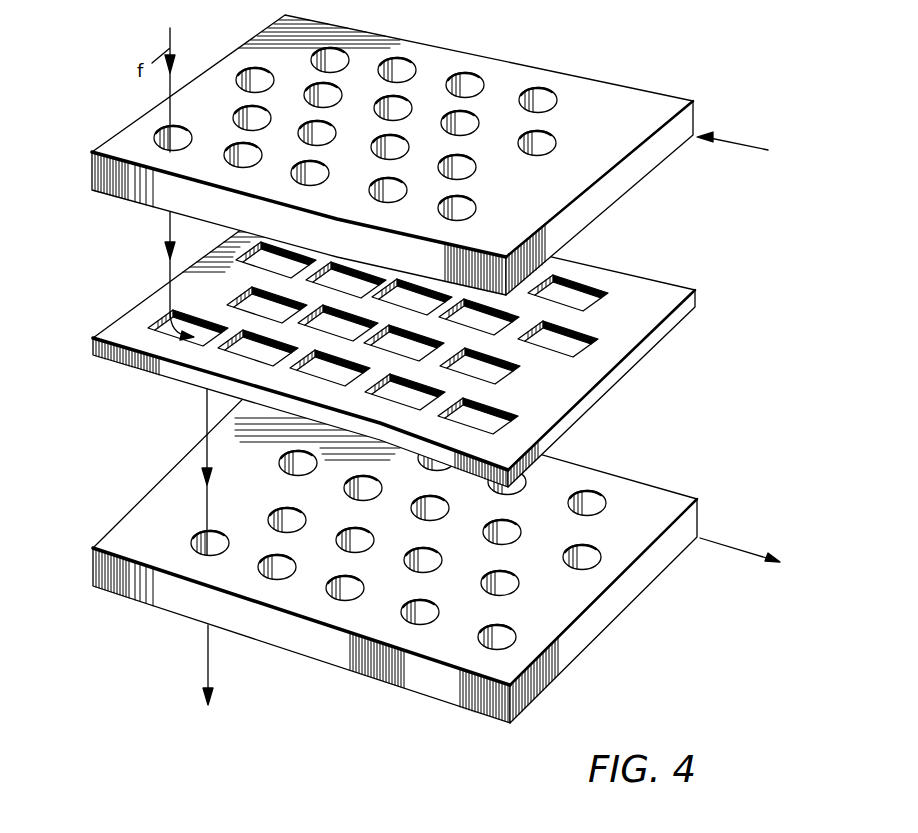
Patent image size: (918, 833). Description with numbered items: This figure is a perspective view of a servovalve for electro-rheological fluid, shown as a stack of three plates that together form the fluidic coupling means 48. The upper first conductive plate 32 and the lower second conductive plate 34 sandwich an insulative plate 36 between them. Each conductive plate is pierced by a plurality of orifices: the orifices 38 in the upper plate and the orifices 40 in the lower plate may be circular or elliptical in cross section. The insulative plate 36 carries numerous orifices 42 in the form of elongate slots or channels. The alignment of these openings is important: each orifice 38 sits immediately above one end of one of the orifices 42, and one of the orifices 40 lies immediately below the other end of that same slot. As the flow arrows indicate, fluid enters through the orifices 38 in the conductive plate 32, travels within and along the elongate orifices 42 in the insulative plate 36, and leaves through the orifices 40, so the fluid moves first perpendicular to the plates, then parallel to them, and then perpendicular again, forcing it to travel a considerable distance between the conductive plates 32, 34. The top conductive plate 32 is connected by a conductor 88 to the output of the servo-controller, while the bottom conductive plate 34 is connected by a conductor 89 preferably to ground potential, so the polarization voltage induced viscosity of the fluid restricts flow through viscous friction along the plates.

The first conductive plate 32 is at (92, 172).
The second conductive plate 34 is at (93, 356).
The insulative plate 36 is at (93, 573).
The orifices 38 is at (513, 193).
The orifices 40 is at (543, 603).
The orifices 42 is at (533, 393).
The fluidic coupling means 48 is at (593, 491).
The conductor 88 is at (748, 143).
The conductor 89 is at (728, 543).